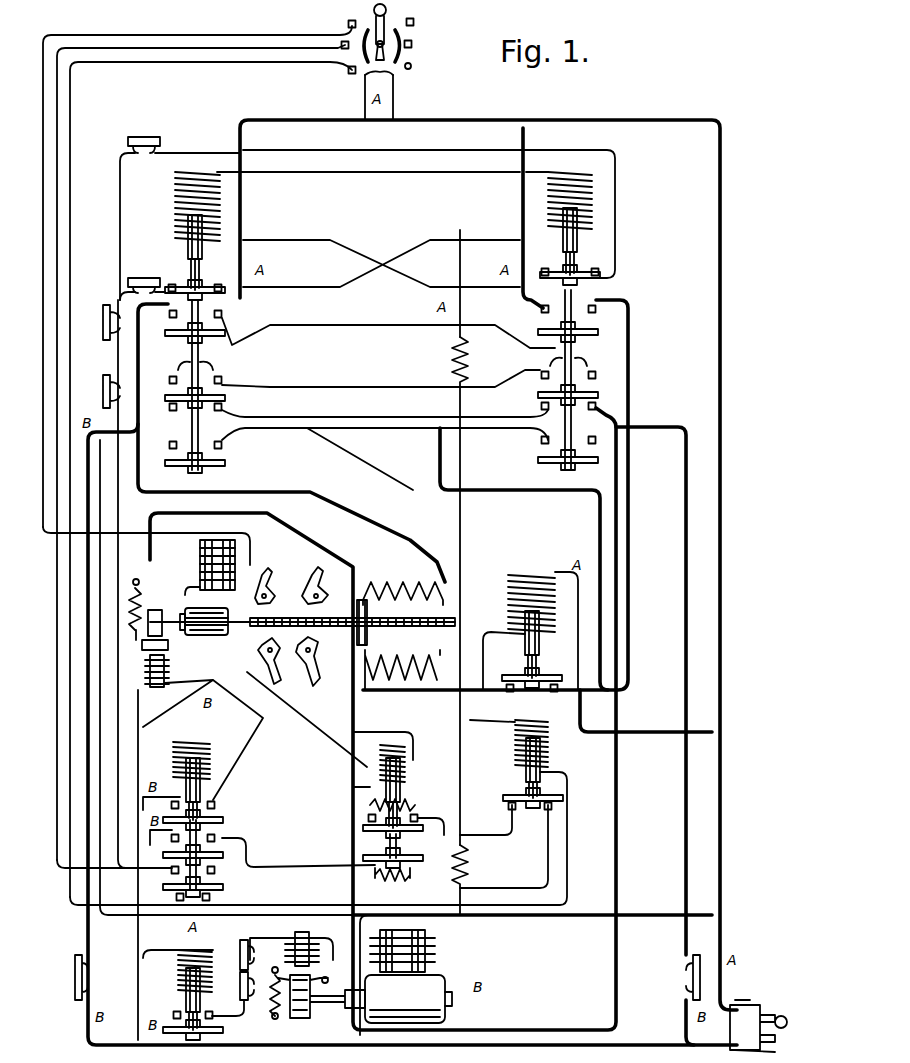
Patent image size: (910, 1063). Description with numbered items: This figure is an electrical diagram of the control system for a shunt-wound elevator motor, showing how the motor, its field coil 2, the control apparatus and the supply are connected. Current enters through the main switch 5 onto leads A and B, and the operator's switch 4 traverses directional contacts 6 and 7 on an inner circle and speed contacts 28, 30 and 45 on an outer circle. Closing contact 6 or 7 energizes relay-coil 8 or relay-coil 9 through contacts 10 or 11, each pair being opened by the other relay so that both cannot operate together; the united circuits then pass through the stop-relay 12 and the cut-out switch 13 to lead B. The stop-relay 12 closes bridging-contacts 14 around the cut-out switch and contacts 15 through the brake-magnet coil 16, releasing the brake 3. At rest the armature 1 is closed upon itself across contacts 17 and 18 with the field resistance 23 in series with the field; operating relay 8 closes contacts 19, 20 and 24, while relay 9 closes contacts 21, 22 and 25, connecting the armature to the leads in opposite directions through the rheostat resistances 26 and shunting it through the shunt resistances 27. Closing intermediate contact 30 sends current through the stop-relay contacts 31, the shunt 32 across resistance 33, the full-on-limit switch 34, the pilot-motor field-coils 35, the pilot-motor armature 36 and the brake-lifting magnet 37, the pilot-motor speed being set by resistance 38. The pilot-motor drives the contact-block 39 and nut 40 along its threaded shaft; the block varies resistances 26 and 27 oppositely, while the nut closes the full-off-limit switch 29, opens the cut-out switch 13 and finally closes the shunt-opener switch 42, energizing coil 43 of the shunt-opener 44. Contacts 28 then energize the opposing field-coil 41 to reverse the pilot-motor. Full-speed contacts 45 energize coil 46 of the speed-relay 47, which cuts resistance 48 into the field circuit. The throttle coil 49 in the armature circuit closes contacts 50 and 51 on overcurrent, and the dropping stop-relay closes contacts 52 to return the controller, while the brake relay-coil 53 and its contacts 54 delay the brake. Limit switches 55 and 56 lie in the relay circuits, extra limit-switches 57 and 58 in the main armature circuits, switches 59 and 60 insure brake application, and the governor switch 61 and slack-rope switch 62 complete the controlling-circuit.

The armature 1 is at (396, 999).
The motor field coil 2 is at (425, 950).
The electrically-controlled brake 3 is at (268, 977).
The operator's switch 4 is at (385, 16).
The main switch 5 is at (745, 1005).
The contact 6 is at (360, 55).
The contact 7 is at (400, 58).
The relay-coil 8 is at (178, 213).
The relay-coil 9 is at (592, 205).
The pair of contacts 10 is at (573, 271).
The pair of contacts 11 is at (195, 294).
The stop-relay 12 is at (210, 760).
The cut-out switch 13 is at (262, 655).
The bridging-contacts 14 is at (215, 805).
The pair of contacts 15 is at (170, 840).
The brake-magnet coil 16 is at (285, 950).
The pair of contacts 17 is at (168, 410).
The pair of contacts 18 is at (540, 406).
The pair of contacts 19 is at (170, 318).
The pair of contacts 20 is at (170, 448).
The pair of contacts 21 is at (541, 309).
The pair of contacts 22 is at (541, 441).
The field resistance 23 is at (450, 355).
The contacts 24 is at (197, 377).
The contacts 25 is at (569, 373).
The resistances of the rheostat 26 is at (400, 578).
The shunt resistances 27 is at (437, 678).
The first speed-contacts 28 is at (376, 16).
The full-off-limit switch 29 is at (272, 592).
The intermediate contacts 30 is at (382, 43).
The contacts of the stop-relay 31 is at (170, 872).
The shunt 32 is at (368, 856).
The resistance 33 is at (372, 876).
The full-on-limit switch 34 is at (316, 573).
The field-coils of the pilot-motor 35 is at (200, 553).
The armature of the pilot-motor 36 is at (207, 635).
The magnet 37 is at (164, 680).
The resistance 38 is at (370, 805).
The contact-block 39 is at (357, 605).
The nut 40 is at (285, 618).
The field-coil of the pilot-motor 41 is at (190, 590).
The shunt-opener switch 42 is at (310, 686).
The coil of the shunt-opener 43 is at (508, 600).
The shunt-opener 44 is at (536, 690).
The full-speed contacts 45 is at (352, 74).
The coil of the speed-relay 46 is at (548, 750).
The speed-relay 47 is at (505, 805).
The resistance 48 is at (468, 866).
The coil of a throttle 49 is at (380, 760).
The contacts 50 is at (363, 821).
The contacts 51 is at (428, 822).
The contacts 52 is at (210, 897).
The brake relay-coil 53 is at (178, 968).
The contacts 54 is at (175, 1012).
The switch 55 is at (144, 137).
The switch 56 is at (144, 278).
The extra limit-switch 57 is at (75, 978).
The extra limit-switch 58 is at (693, 978).
The limit-switch 59 is at (240, 955).
The limit-switch 60 is at (240, 986).
The switch 61 is at (103, 322).
The switch 62 is at (103, 391).